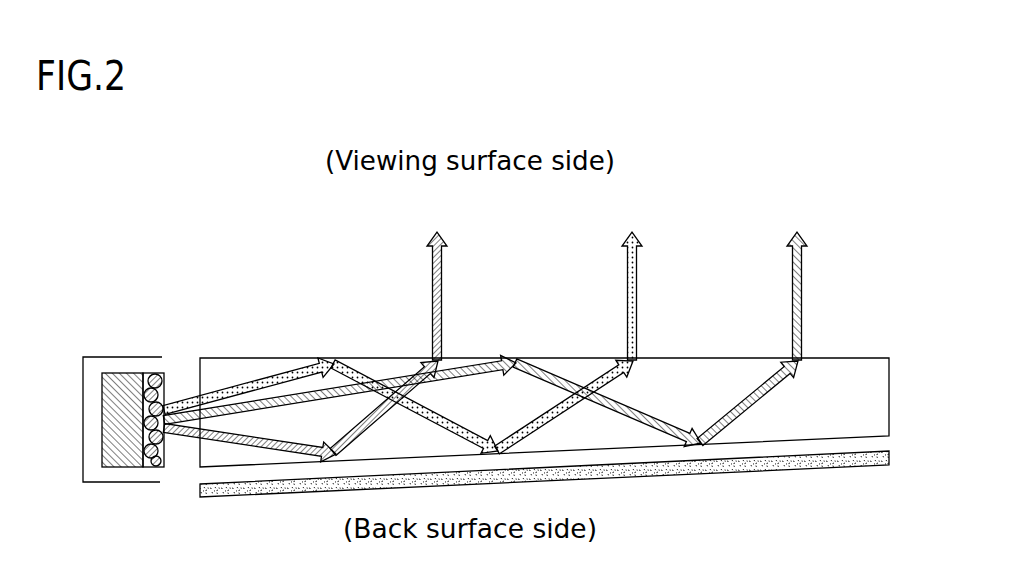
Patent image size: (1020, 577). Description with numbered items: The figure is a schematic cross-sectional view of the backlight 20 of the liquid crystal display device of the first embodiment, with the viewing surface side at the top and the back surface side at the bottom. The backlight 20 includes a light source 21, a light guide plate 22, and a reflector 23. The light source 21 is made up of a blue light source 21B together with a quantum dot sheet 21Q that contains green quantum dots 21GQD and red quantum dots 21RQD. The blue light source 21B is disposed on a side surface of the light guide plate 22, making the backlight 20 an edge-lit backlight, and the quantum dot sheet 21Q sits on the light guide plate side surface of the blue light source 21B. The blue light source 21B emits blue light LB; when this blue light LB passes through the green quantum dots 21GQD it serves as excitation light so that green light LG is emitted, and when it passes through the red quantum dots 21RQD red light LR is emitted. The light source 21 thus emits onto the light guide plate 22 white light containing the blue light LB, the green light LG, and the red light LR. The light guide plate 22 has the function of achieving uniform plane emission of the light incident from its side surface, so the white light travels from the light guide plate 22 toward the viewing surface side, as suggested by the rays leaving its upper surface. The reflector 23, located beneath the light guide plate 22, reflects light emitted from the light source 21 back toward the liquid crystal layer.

The backlight 20 is at (826, 192).
The light source 21 is at (297, 203).
The blue light source 21B is at (118, 390).
The quantum dot sheet 21Q is at (297, 250).
The green quantum dots 21GQD is at (141, 388).
The red quantum dots 21RQD is at (157, 373).
The light guide plate 22 is at (851, 416).
The reflector 23 is at (800, 463).
The blue light LB is at (323, 347).
The green light LG is at (421, 343).
The red light LR is at (503, 339).